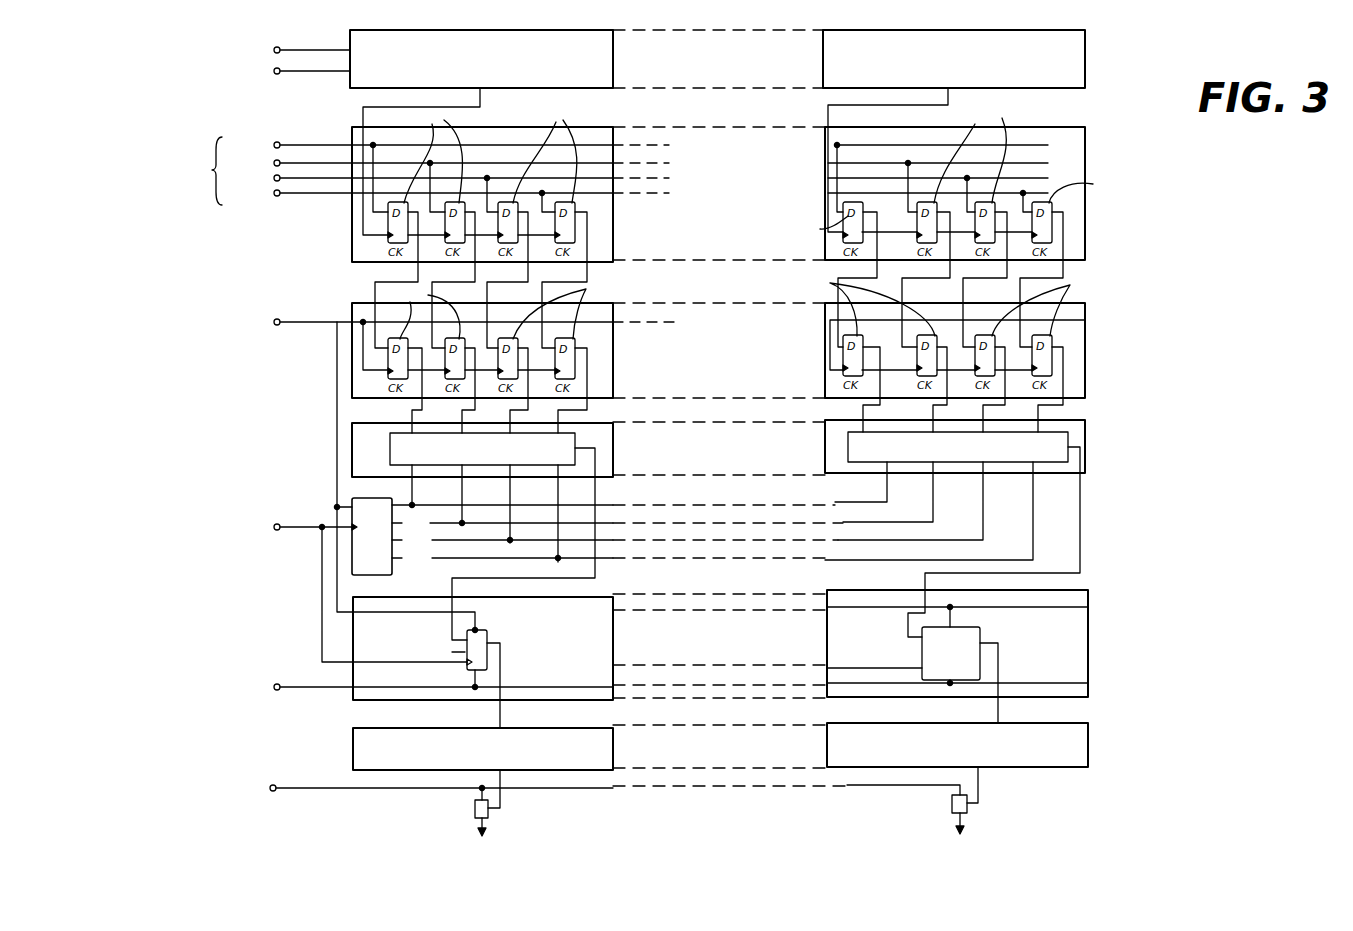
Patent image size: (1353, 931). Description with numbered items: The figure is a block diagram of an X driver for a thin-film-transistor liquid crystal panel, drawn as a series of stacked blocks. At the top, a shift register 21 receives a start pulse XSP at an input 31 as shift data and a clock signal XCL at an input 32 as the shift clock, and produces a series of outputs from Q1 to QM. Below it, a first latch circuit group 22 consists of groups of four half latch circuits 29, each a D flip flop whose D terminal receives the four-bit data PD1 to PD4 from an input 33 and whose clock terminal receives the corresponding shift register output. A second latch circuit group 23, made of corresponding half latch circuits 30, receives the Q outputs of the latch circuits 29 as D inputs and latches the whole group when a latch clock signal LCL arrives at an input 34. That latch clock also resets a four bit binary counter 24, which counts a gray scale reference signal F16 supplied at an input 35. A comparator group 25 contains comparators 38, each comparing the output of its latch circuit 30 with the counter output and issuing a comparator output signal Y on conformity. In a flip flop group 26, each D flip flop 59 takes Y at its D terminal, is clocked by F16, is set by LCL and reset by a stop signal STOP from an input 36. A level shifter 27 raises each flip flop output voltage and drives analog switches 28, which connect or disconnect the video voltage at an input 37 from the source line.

The shift register 21 is at (730, 69).
The first latch circuit group 22 is at (752, 209).
The second latch circuit group 23 is at (745, 363).
The four bit binary counter 24 is at (372, 568).
The comparator group 25 is at (745, 460).
The flip flop group 26 is at (747, 654).
The level shifter 27 is at (747, 751).
The analog switch 28 is at (475, 808).
The half latch circuit 29 is at (353, 258).
The half latch circuit 30 is at (352, 393).
The input 31 is at (281, 47).
The input 32 is at (277, 74).
The input 33 is at (282, 152).
The input 34 is at (281, 318).
The input 35 is at (292, 517).
The input 36 is at (292, 673).
The input 37 is at (276, 785).
The comparator 38 is at (572, 440).
The D flip flop 59 is at (464, 633).